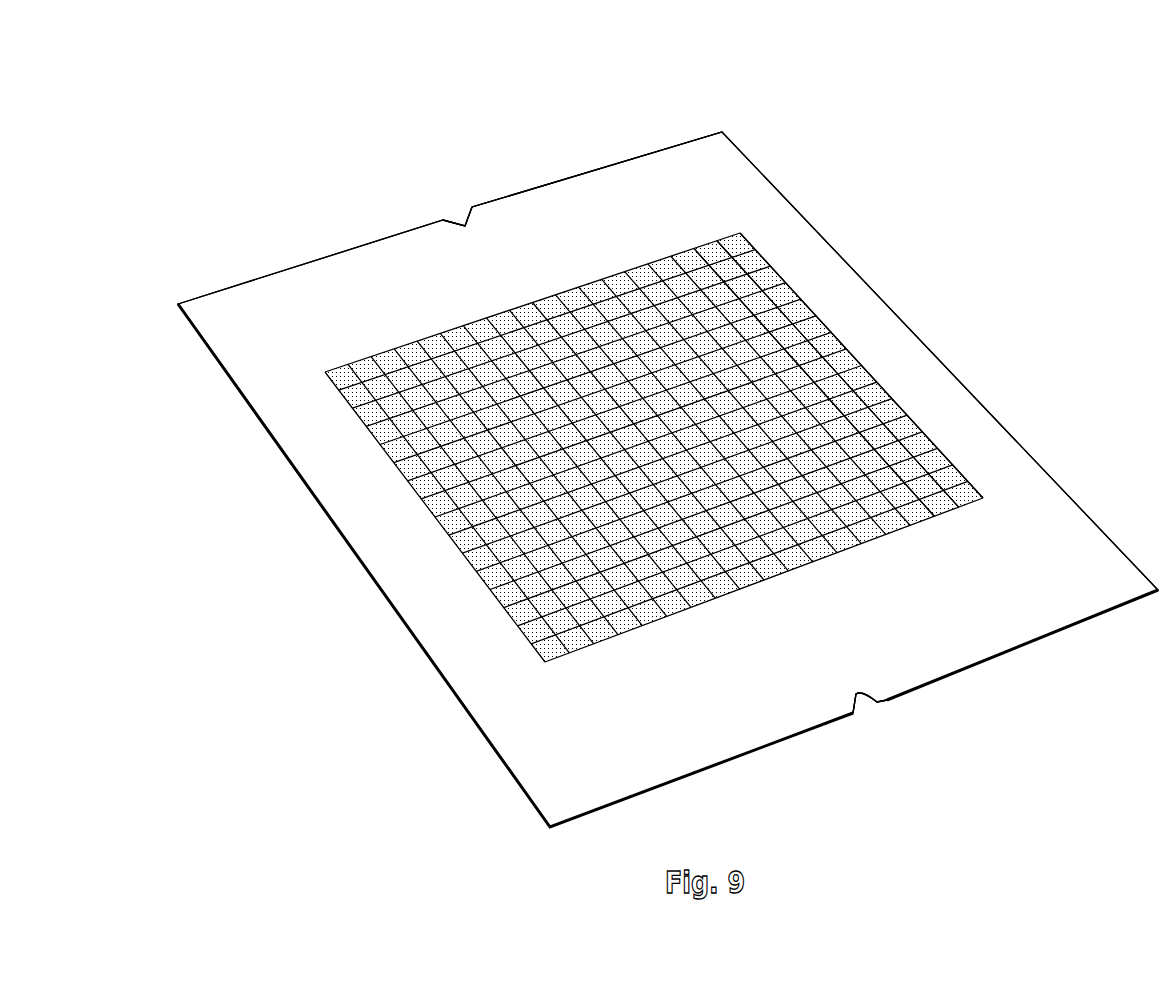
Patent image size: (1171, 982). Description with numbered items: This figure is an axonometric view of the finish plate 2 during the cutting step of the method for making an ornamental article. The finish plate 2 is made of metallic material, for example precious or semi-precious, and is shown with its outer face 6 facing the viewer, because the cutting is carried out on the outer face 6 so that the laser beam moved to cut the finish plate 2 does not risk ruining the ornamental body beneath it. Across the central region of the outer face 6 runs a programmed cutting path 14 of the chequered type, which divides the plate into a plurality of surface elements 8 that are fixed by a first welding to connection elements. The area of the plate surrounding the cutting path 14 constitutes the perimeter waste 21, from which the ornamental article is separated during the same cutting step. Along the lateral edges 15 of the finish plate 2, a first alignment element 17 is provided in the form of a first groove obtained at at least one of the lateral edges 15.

The finish plate 2 is at (668, 436).
The outer face 6 is at (615, 761).
The surface elements 8 is at (890, 398).
The cutting path 14 is at (823, 327).
The lateral edges 15 is at (522, 193).
The first alignment element 17 is at (465, 225).
The perimeter waste 21 is at (732, 180).